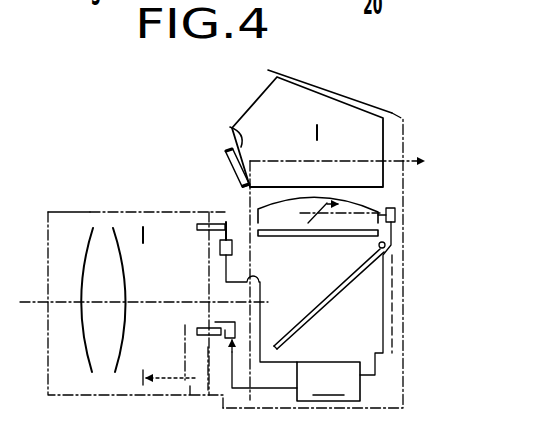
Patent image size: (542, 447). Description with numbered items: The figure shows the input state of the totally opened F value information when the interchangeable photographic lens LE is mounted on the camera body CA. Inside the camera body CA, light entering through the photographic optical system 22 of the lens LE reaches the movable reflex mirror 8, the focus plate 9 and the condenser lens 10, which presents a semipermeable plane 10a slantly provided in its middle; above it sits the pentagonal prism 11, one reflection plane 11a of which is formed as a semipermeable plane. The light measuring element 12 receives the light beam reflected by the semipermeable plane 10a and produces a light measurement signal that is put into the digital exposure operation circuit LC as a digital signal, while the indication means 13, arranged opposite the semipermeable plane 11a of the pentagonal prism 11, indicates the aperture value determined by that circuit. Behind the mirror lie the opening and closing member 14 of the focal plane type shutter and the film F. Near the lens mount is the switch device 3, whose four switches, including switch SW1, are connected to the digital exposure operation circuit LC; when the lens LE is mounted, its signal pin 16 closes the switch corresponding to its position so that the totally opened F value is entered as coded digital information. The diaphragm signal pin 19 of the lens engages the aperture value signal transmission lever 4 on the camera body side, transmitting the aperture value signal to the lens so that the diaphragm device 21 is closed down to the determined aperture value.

The switch device 3 is at (226, 222).
The aperture value signal transmission lever 4 is at (220, 395).
The movable reflex mirror 8 is at (340, 282).
The focus plate 9 is at (354, 237).
The condenser lens 10 is at (380, 232).
The semipermeable plane 10a is at (355, 200).
The pentagonal prism 11 is at (312, 89).
The semipermeable reflection plane 11a is at (239, 121).
The light measuring element 12 is at (397, 214).
The indication means 13 is at (227, 148).
The opening and closing member of the focal plane type shutter 14 is at (393, 355).
The signal pin 16 is at (196, 224).
The diaphragm signal pin 19 is at (196, 394).
The diaphragm device 21 is at (130, 393).
The photographic optical system 22 is at (80, 330).
The photographic lens LE is at (106, 206).
The camera body CA is at (374, 101).
The film F is at (395, 341).
The digital exposure operation circuit LC is at (328, 381).
The switch SW1 is at (222, 222).